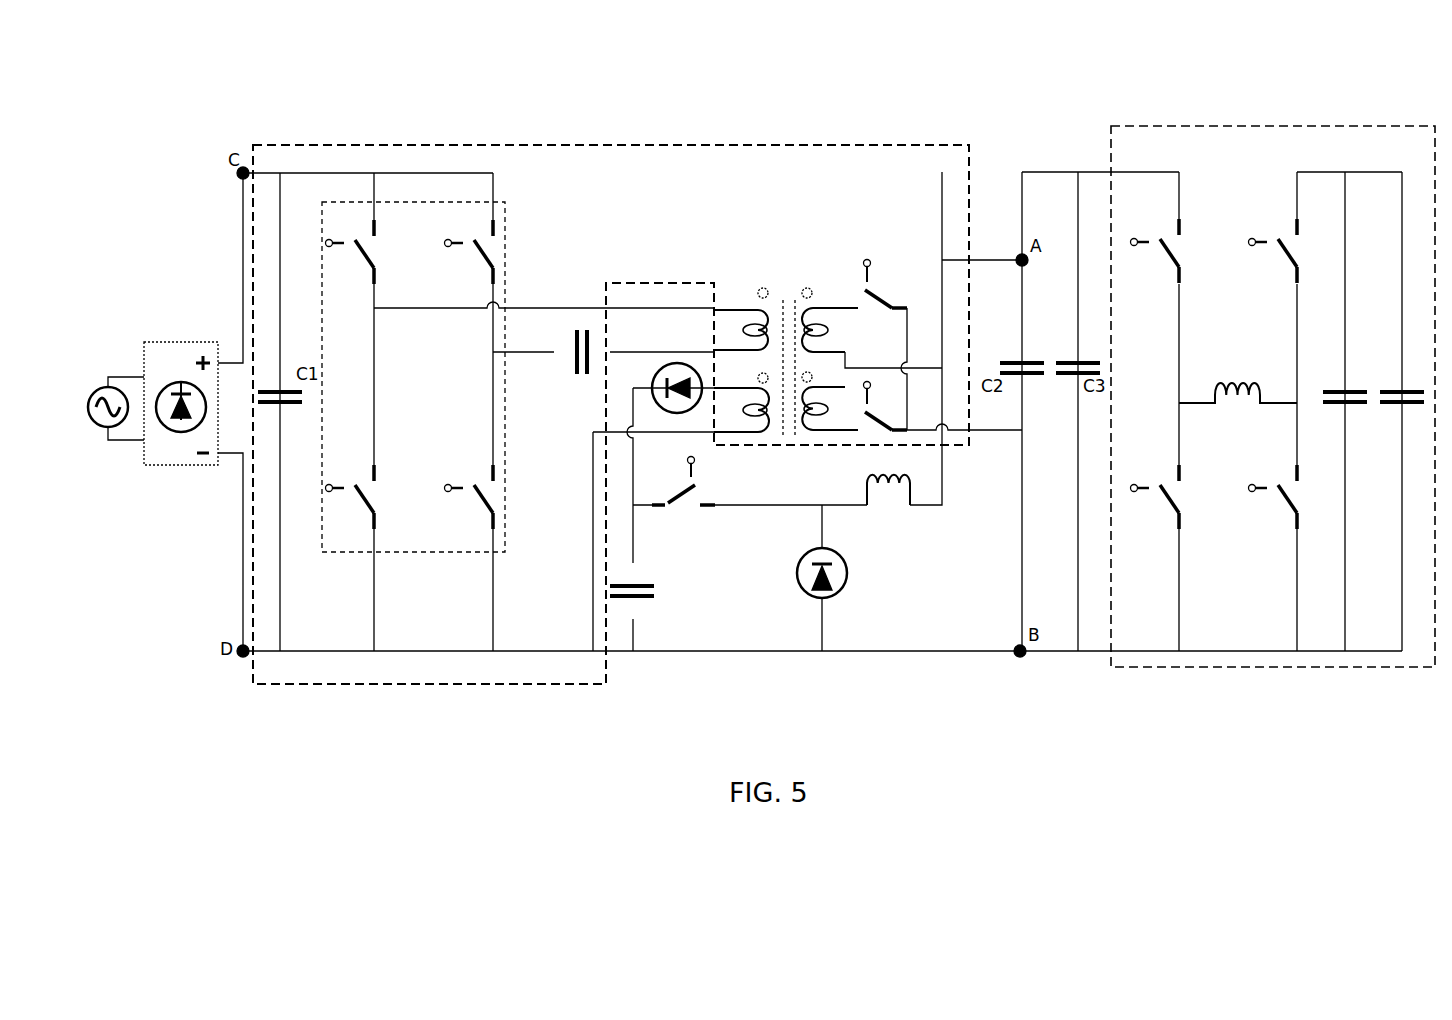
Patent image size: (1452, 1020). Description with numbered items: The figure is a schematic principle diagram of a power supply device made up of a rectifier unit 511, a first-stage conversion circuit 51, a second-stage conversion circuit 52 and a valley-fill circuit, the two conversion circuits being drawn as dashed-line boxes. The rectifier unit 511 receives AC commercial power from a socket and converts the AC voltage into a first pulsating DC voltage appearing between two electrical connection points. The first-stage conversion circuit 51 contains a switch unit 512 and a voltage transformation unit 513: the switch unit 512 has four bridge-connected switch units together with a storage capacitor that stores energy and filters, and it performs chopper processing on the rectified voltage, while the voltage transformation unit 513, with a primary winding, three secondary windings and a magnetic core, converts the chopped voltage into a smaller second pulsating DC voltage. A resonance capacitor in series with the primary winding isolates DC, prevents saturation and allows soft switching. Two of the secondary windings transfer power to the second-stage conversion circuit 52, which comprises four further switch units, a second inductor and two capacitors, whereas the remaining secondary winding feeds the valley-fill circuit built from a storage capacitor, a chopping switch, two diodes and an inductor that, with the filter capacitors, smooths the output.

The first-stage conversion circuit 51 is at (818, 145).
The rectifier unit 511 is at (147, 394).
The switch unit 512 is at (505, 218).
The voltage transformation unit 513 is at (789, 292).
The second-stage conversion circuit 52 is at (1212, 126).